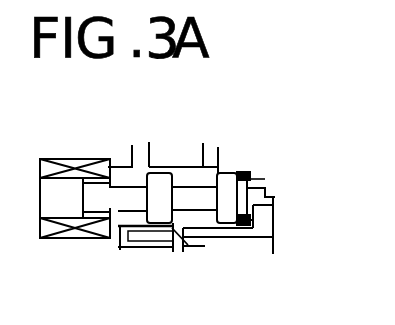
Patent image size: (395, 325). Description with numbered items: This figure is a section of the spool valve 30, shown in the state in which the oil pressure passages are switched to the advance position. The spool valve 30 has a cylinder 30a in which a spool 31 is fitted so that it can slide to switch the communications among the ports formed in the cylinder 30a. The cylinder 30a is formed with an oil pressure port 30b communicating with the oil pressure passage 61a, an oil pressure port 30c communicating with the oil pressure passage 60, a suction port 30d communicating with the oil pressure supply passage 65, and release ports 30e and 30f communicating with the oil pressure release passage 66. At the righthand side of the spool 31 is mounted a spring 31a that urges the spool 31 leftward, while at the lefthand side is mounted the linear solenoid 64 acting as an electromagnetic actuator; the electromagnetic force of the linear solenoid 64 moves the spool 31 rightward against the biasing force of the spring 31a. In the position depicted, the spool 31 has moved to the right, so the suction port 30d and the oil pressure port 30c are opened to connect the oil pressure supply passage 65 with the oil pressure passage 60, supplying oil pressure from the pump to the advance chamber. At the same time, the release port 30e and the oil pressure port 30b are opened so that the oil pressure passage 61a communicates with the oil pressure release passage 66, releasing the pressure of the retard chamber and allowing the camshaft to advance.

The linear solenoid 64 is at (53, 158).
The oil pressure port 30b is at (132, 166).
The oil pressure passage 61a is at (140, 139).
The oil pressure port 30c is at (222, 150).
The oil pressure passage 60 is at (211, 138).
The spool 31 is at (186, 203).
The cylinder 30a is at (226, 172).
The spring 31a is at (265, 179).
The release port 30f is at (275, 197).
The spool valve 30 is at (282, 222).
The release port 30e is at (120, 250).
The suction port 30d is at (188, 245).
The oil pressure supply passage 65 is at (178, 256).
The oil pressure release passage 66 is at (273, 254).